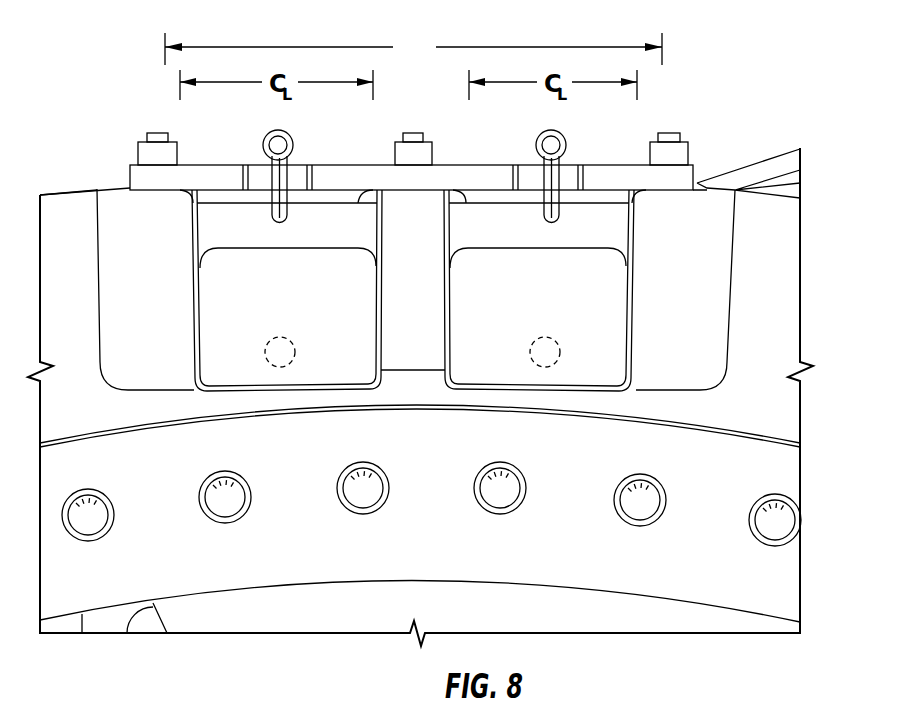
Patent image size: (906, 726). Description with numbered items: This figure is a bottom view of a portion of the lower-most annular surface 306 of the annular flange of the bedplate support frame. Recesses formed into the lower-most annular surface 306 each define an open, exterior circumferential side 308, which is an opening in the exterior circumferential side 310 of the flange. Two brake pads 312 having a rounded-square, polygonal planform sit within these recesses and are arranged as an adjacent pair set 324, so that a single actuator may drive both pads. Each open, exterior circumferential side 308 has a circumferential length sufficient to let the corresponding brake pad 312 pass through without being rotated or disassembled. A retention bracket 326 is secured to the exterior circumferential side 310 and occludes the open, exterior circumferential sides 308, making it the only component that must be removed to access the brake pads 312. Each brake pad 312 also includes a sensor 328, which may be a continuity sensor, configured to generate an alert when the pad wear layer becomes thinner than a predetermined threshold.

The lower-most annular surface 306 is at (772, 243).
The open, exterior circumferential side 308 is at (369, 193).
The exterior circumferential side 310 is at (64, 192).
The brake pad 312 is at (217, 330).
The pair set 324 is at (413, 49).
The retention bracket 326 is at (145, 182).
The sensor 328 is at (263, 146).